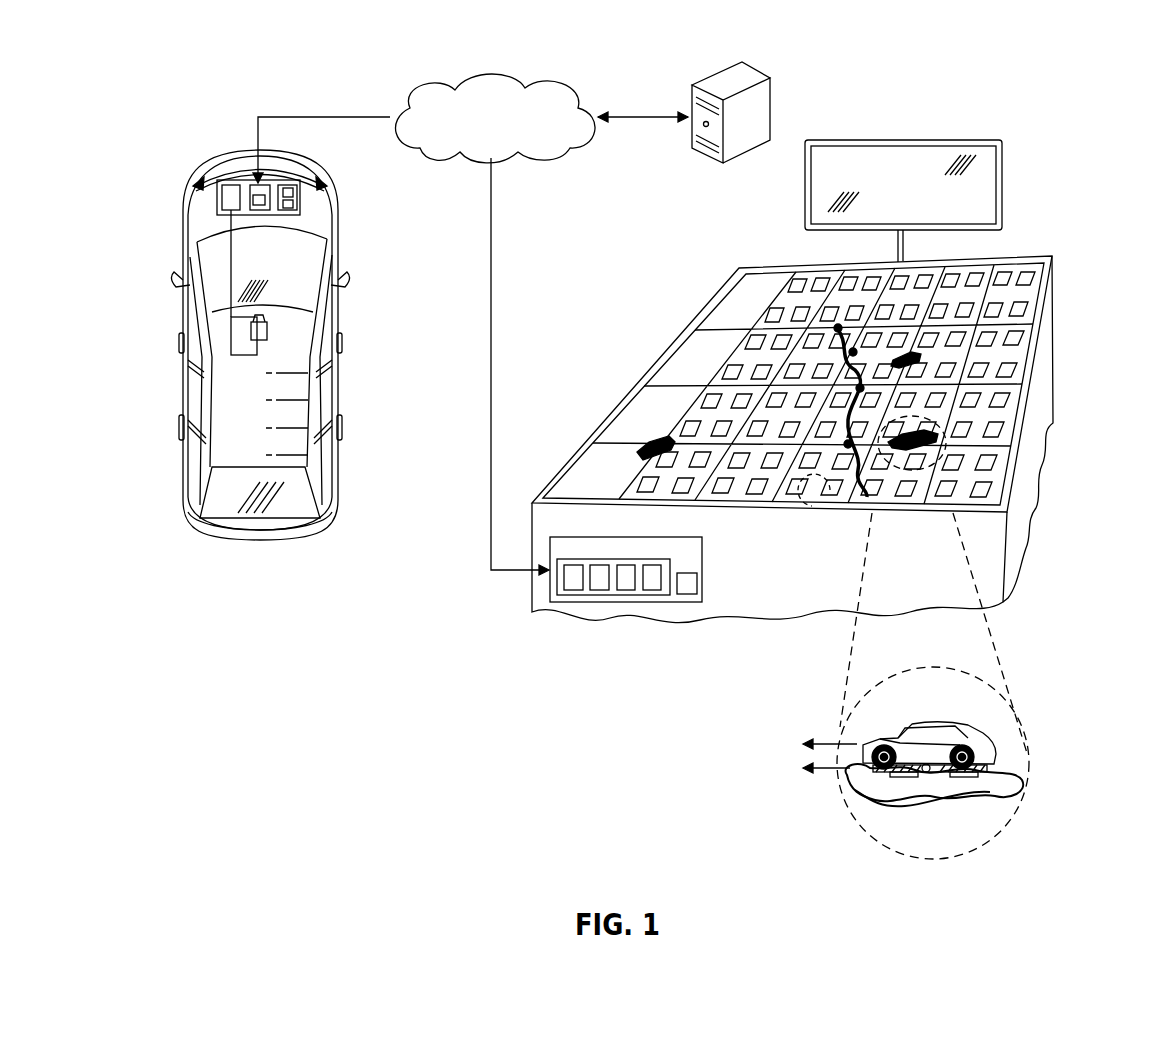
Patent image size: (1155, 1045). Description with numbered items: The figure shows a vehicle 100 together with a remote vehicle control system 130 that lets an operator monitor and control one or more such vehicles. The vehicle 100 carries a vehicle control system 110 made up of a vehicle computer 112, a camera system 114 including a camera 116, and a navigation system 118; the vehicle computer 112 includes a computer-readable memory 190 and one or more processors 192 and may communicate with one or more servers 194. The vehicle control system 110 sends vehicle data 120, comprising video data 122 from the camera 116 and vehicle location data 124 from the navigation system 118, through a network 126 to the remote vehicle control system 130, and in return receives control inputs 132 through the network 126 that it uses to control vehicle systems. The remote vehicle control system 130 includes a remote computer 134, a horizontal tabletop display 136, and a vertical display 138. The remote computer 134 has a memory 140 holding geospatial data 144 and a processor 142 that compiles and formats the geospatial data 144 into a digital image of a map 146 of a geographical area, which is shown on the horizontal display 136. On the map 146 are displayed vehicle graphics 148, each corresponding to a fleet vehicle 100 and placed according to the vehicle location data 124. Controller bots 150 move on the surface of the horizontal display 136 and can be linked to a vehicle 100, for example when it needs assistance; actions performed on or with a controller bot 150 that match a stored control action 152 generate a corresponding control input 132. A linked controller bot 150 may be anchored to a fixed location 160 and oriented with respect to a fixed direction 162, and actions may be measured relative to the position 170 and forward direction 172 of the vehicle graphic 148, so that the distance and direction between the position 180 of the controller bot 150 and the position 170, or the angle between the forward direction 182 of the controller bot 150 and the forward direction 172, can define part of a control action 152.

The vehicle 100 is at (195, 550).
The vehicle control system 110 is at (186, 178).
The vehicle computer 112 is at (285, 183).
The camera system 114 is at (217, 198).
The camera 116 is at (267, 333).
The navigation (NAV) system 118 is at (252, 184).
The vehicle data 120 is at (326, 115).
The video data 122 is at (243, 357).
The vehicle location data 124 is at (262, 207).
The network 126 is at (513, 129).
The remote vehicle control system 130 is at (512, 640).
The control inputs 132 is at (488, 262).
The remote computer 134 is at (705, 552).
The horizontal display 136 is at (998, 492).
The vertical display 138 is at (1003, 183).
The memory 140 is at (567, 602).
The processor 142 is at (698, 580).
The geospatial data 144 is at (565, 577).
The map 146 is at (1013, 360).
The vehicle graphics 148 is at (900, 327).
The controller bots 150 is at (907, 435).
The stored control action 152 is at (600, 590).
The fixed location 160 is at (805, 513).
The fixed direction 162 is at (831, 462).
The position of the vehicle graphic 170 is at (897, 792).
The forward direction of the vehicle graphic 172 is at (822, 770).
The position of the controller bot 180 is at (960, 792).
The forward direction of the controller bot 182 is at (823, 742).
The computer-readable memory 190 is at (297, 192).
The processor(s) 192 is at (298, 205).
The server(s) 194 is at (785, 68).